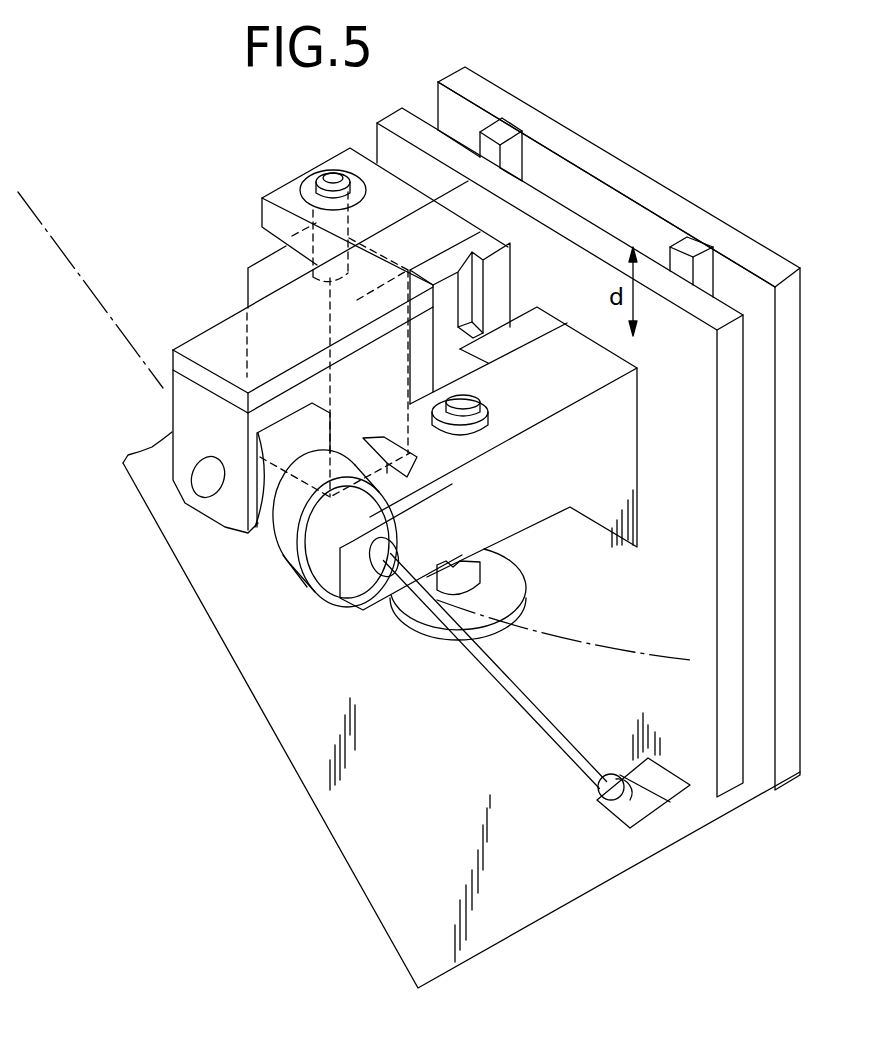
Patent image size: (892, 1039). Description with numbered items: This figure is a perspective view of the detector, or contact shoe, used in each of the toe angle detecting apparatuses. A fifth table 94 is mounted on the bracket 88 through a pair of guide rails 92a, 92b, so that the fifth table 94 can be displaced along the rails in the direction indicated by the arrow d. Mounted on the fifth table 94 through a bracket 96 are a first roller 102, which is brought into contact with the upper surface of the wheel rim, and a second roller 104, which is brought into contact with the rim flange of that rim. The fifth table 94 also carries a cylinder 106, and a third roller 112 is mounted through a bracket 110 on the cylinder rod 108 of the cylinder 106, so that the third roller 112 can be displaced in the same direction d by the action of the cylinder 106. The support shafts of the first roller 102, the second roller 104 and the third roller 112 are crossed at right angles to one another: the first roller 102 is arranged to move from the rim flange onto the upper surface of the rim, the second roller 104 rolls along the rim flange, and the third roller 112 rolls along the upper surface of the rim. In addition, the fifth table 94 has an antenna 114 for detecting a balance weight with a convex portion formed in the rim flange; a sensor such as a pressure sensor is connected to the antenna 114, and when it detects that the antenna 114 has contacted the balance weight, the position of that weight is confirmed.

The bracket 88 is at (792, 428).
The fifth table 94 is at (693, 538).
The guide rail 92a is at (503, 130).
The guide rail 92b is at (693, 245).
The bracket 96 is at (533, 503).
The first roller 102 is at (310, 548).
The second roller 104 is at (417, 615).
The cylinder 106 is at (273, 263).
The cylinder rod 108 is at (330, 177).
The bracket 110 is at (210, 347).
The third roller 112 is at (265, 462).
The antenna 114 is at (553, 730).